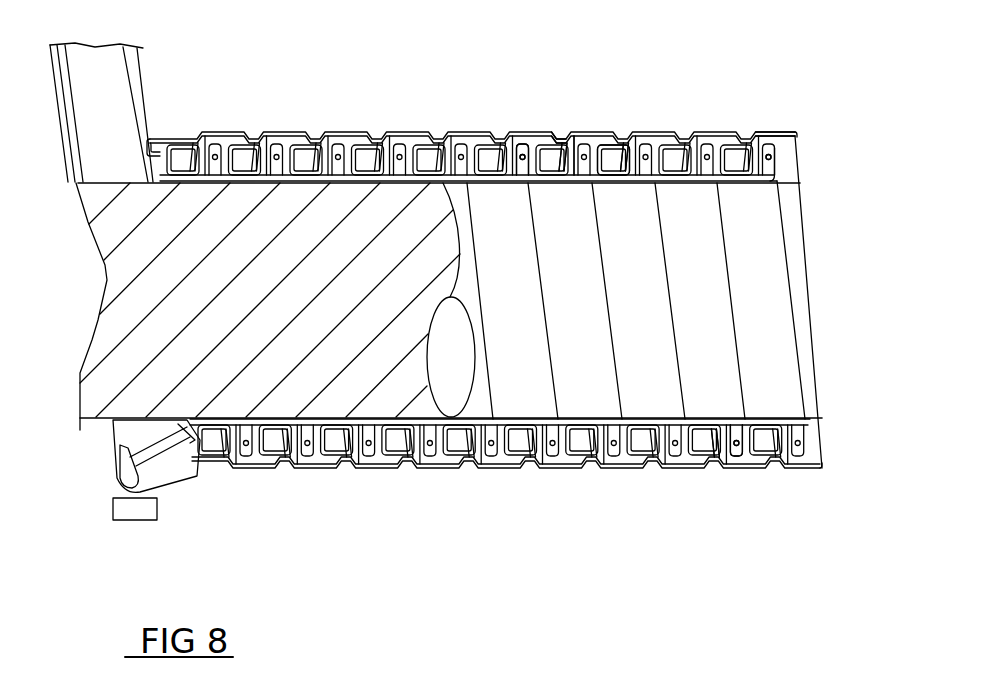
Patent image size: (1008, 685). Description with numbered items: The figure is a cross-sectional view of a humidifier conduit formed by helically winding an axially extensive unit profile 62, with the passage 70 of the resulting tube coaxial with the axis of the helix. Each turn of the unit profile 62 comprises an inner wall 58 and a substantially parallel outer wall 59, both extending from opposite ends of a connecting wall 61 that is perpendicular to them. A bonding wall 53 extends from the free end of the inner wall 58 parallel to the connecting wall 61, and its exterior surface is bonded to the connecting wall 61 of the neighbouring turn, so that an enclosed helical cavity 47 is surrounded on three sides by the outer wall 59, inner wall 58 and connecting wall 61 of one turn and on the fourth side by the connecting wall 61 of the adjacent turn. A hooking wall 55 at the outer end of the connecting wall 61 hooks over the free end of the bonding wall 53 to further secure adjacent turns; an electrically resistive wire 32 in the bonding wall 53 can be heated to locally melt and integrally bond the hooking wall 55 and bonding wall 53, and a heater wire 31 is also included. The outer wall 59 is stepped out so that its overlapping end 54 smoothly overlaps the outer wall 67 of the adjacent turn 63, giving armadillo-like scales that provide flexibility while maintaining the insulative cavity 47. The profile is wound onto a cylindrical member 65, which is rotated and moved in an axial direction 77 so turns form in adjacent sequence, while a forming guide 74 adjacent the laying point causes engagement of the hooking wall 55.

The heater wire 31 is at (775, 177).
The electrically resistive wire 32 is at (773, 155).
The cavity 47 is at (682, 160).
The bonding wall 53 is at (602, 158).
The overlapping end 54 is at (682, 463).
The hooking wall 55 is at (580, 153).
The inner wall 58 is at (568, 147).
The outer wall 59 is at (558, 138).
The connecting wall 61 is at (530, 153).
The unit profile 62 is at (777, 109).
The adjacent turn 63 is at (715, 392).
The cylindrical member 65 is at (123, 275).
The outer wall of adjacent turn 67 is at (710, 430).
The passage 70 is at (660, 314).
The forming guide 74 is at (120, 437).
The axial direction 77 is at (140, 314).